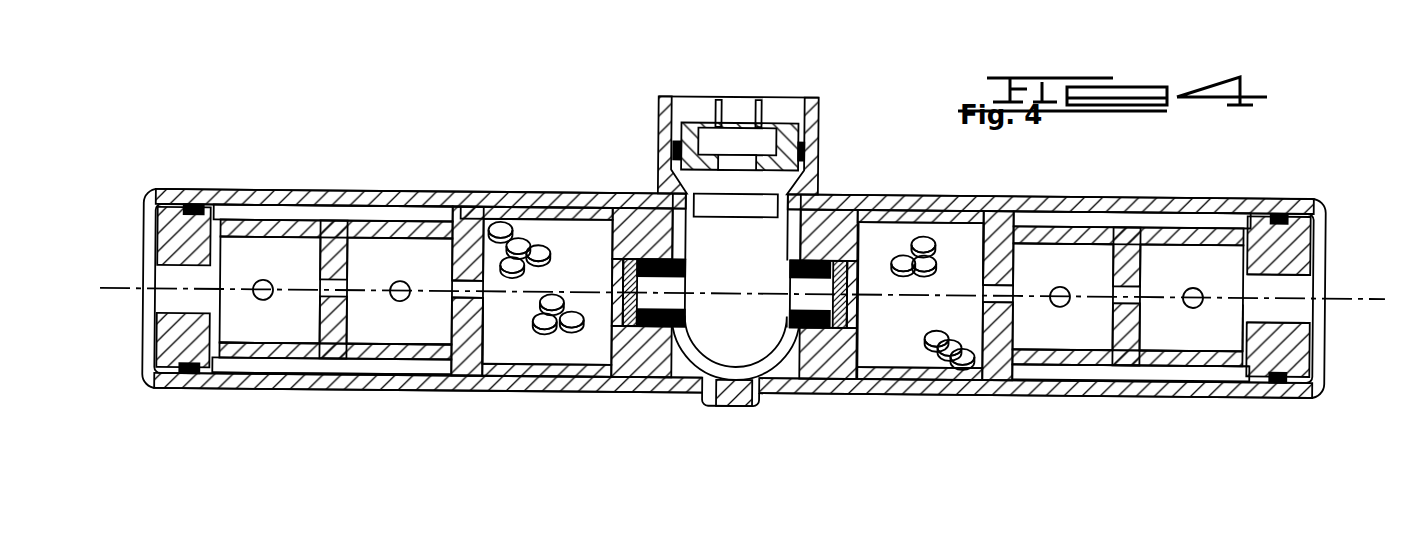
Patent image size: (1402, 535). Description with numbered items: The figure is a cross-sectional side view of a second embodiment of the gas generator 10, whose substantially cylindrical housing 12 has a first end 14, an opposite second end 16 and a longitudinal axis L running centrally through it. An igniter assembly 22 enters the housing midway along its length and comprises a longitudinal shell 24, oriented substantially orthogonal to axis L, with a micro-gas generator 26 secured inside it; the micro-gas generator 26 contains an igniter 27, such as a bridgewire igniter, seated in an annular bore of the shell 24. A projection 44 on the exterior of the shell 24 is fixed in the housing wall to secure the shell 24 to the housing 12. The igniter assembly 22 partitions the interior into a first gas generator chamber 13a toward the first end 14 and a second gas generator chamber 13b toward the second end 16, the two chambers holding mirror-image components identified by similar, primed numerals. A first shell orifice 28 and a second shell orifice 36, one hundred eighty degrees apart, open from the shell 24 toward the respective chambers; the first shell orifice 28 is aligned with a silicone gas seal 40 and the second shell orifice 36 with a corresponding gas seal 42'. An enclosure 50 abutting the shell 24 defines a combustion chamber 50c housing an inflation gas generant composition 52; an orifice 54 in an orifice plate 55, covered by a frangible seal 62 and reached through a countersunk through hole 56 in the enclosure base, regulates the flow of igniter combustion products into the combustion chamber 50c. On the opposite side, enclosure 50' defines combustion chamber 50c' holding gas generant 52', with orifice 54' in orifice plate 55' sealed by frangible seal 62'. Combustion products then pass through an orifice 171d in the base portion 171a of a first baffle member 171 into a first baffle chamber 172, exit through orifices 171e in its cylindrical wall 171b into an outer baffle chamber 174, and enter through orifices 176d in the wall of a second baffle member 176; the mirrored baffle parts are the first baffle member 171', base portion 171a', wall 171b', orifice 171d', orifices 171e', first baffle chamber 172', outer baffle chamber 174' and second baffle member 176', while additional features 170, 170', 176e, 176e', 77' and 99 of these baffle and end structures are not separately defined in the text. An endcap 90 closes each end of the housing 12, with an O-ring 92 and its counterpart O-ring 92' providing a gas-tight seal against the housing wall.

The gas generator 10 is at (343, 140).
The housing 12 is at (210, 395).
The first gas generator chamber 13a is at (366, 384).
The second gas generator chamber 13b is at (1152, 213).
The first end 14 is at (163, 401).
The second end 16 is at (1306, 195).
The igniter assembly 22 is at (825, 105).
The shell 24 is at (657, 103).
The micro-gas generator 26 is at (694, 183).
The igniter 27 is at (735, 135).
The first shell orifice 28 is at (673, 291).
The second shell orifice 36 is at (796, 297).
The silicone gas seal 40 is at (640, 258).
The chamber wall 42' is at (842, 254).
The projection 44 is at (737, 397).
The enclosure 50 is at (536, 322).
The enclosure 50' is at (920, 336).
The combustion chamber 50c is at (504, 382).
The combustion chamber 50c' is at (997, 222).
The inflation gas generant composition 52 is at (519, 216).
The inflation gas generant composition 52' is at (933, 259).
The orifice 54 is at (597, 289).
The orifice 54' is at (857, 294).
The orifice plate 55 is at (683, 293).
The orifice plate 55' is at (823, 349).
The countersunk through hole 56 is at (637, 340).
The frangible seal 62 is at (608, 331).
The frangible seal 62' is at (857, 320).
The piston face 77' is at (1316, 334).
The endcap 90 is at (163, 250).
The O-ring 92 is at (181, 244).
The end seal 92' is at (1308, 332).
The end cap bore 99 is at (1297, 318).
The cylinder body 170 is at (336, 186).
The cylinder body 170' is at (1131, 412).
The first baffle member 171 is at (336, 394).
The cylinder 171' is at (1127, 403).
The base portion 171a is at (447, 392).
The cylinder wall 171a' is at (1012, 349).
The cylindrical wall 171b is at (479, 207).
The cylinder wall 171b' is at (1126, 418).
The orifice 171d is at (428, 308).
The rod passage 171d' is at (1049, 296).
The orifices 171e is at (405, 291).
The piston 171e' is at (1072, 224).
The first baffle chamber 172 is at (377, 257).
The cylinder divider 172' is at (1128, 195).
The outer baffle chamber 174 is at (334, 173).
The plate 174' is at (1145, 411).
The second baffle member 176 is at (334, 414).
The piston body 176' is at (1220, 254).
The orifices 176d is at (257, 395).
The piston 176e is at (270, 289).
The piston 176e' is at (1199, 298).
The longitudinal axis L is at (1381, 293).